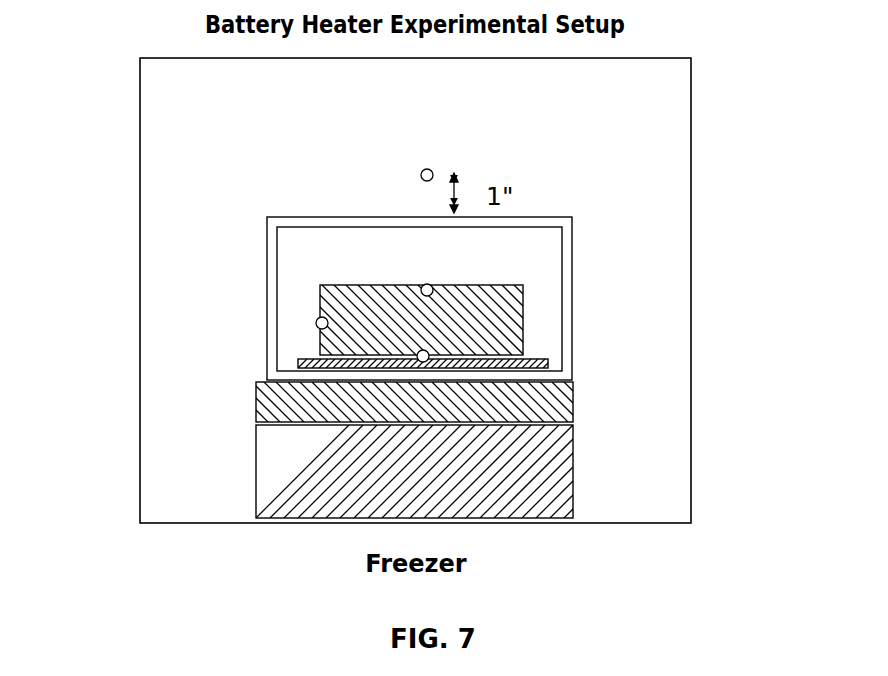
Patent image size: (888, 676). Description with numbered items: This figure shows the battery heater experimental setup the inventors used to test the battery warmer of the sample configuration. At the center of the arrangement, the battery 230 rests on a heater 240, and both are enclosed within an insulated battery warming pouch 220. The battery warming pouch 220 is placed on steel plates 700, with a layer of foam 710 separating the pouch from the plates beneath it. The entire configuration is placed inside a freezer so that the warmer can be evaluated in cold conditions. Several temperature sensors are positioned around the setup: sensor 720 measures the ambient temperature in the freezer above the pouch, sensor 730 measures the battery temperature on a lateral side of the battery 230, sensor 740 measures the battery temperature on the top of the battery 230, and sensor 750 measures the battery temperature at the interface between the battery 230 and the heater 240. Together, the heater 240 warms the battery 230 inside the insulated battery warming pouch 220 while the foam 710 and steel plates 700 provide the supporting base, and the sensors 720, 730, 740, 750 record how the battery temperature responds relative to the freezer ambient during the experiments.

The insulated battery warming pouch 220 is at (603, 369).
The battery 230 is at (505, 301).
The heater 240 is at (548, 363).
The steel plates 700 is at (575, 486).
The foam 710 is at (575, 403).
The sensor 720 is at (410, 175).
The sensor 730 is at (315, 323).
The sensor 740 is at (410, 290).
The sensor 750 is at (416, 356).